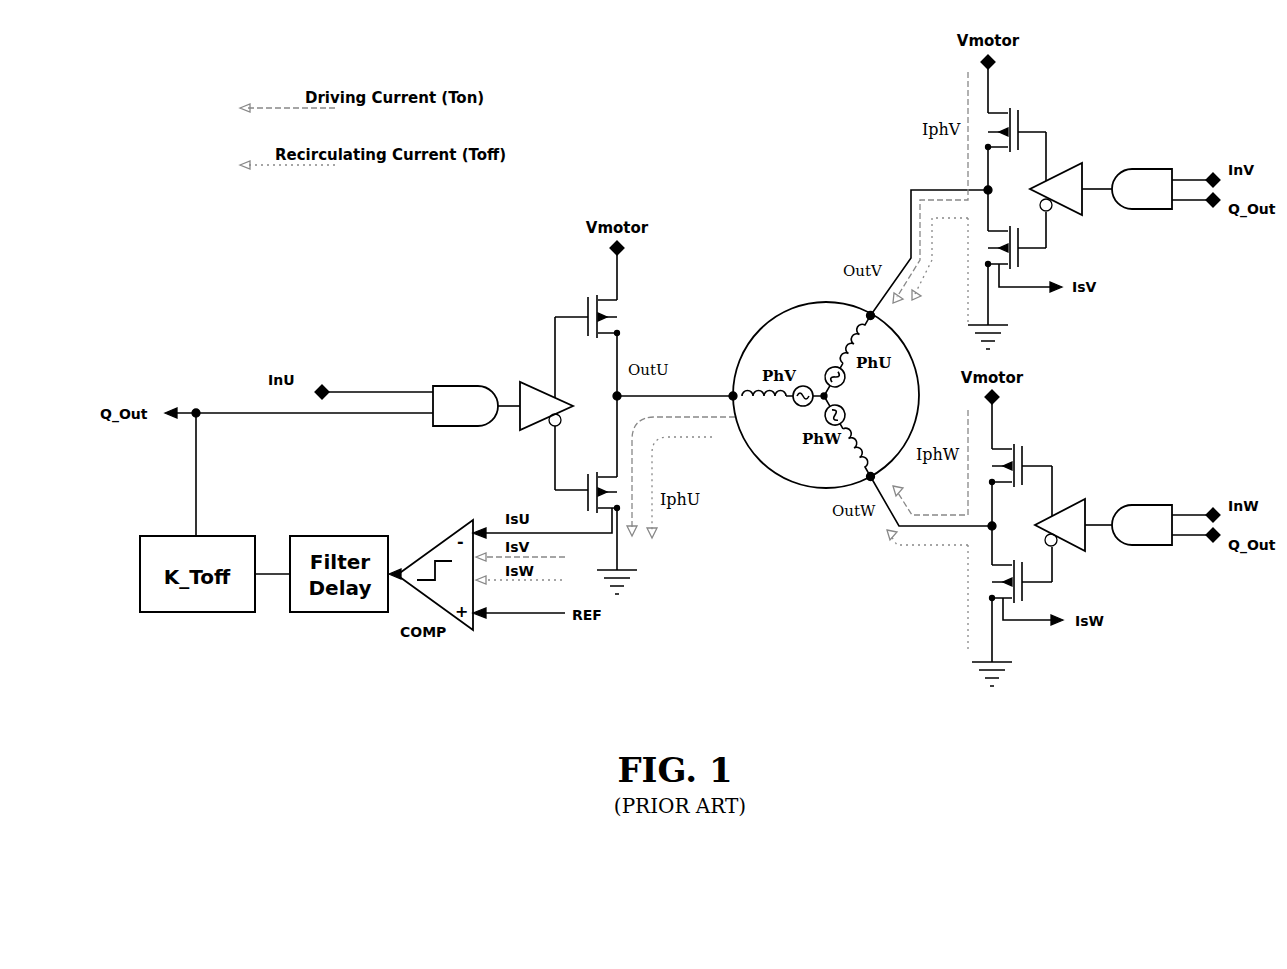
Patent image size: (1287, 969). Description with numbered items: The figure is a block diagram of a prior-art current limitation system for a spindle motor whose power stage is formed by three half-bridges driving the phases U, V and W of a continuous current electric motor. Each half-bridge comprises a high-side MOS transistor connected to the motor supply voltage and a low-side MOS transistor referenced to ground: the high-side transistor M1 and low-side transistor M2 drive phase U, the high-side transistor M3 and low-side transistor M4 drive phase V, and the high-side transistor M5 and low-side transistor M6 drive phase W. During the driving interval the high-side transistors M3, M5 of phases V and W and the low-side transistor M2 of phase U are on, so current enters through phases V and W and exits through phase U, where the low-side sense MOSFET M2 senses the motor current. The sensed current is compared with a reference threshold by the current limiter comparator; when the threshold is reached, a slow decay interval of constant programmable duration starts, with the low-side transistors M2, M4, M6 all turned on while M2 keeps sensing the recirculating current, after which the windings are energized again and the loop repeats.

The high-side MOS transistor M1 is at (587, 316).
The low-side MOS transistor M2 is at (587, 493).
The high-side MOS transistor M3 is at (1017, 130).
The low-side MOS transistor M4 is at (1017, 249).
The high-side MOS transistor M5 is at (1021, 465).
The low-side MOS transistor M6 is at (1021, 586).